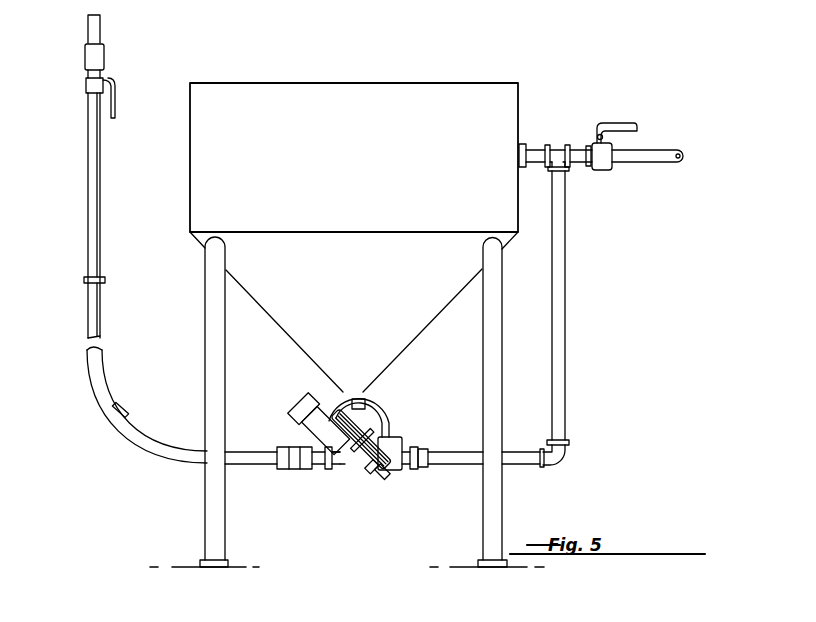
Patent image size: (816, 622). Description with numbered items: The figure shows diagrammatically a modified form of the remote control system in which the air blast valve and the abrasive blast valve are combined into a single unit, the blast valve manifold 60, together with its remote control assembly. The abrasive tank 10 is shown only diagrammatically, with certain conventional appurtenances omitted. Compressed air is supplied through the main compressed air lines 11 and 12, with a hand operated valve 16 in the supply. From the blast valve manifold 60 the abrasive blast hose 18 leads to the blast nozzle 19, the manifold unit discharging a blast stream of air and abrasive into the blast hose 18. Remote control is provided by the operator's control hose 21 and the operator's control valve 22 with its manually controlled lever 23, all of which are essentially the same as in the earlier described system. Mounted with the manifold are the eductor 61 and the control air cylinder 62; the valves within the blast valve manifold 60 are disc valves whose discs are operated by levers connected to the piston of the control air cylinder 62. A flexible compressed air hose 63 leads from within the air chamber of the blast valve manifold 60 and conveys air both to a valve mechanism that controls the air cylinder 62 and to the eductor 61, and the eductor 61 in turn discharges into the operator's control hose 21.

The abrasive tank 10 is at (310, 203).
The main compressed air line 11 is at (673, 150).
The main compressed air line 12 is at (568, 322).
The hand operated valve 16 is at (602, 155).
The abrasive blast hose 18 is at (95, 388).
The blast nozzle 19 is at (100, 32).
The operator's control hose 21 is at (105, 317).
The operator's control valve 22 is at (103, 87).
The manually controlled lever 23 is at (116, 110).
The blast valve manifold 60 is at (408, 429).
The eductor 61 is at (294, 406).
The control air cylinder 62 is at (342, 442).
The flexible compressed air hose 63 is at (379, 403).